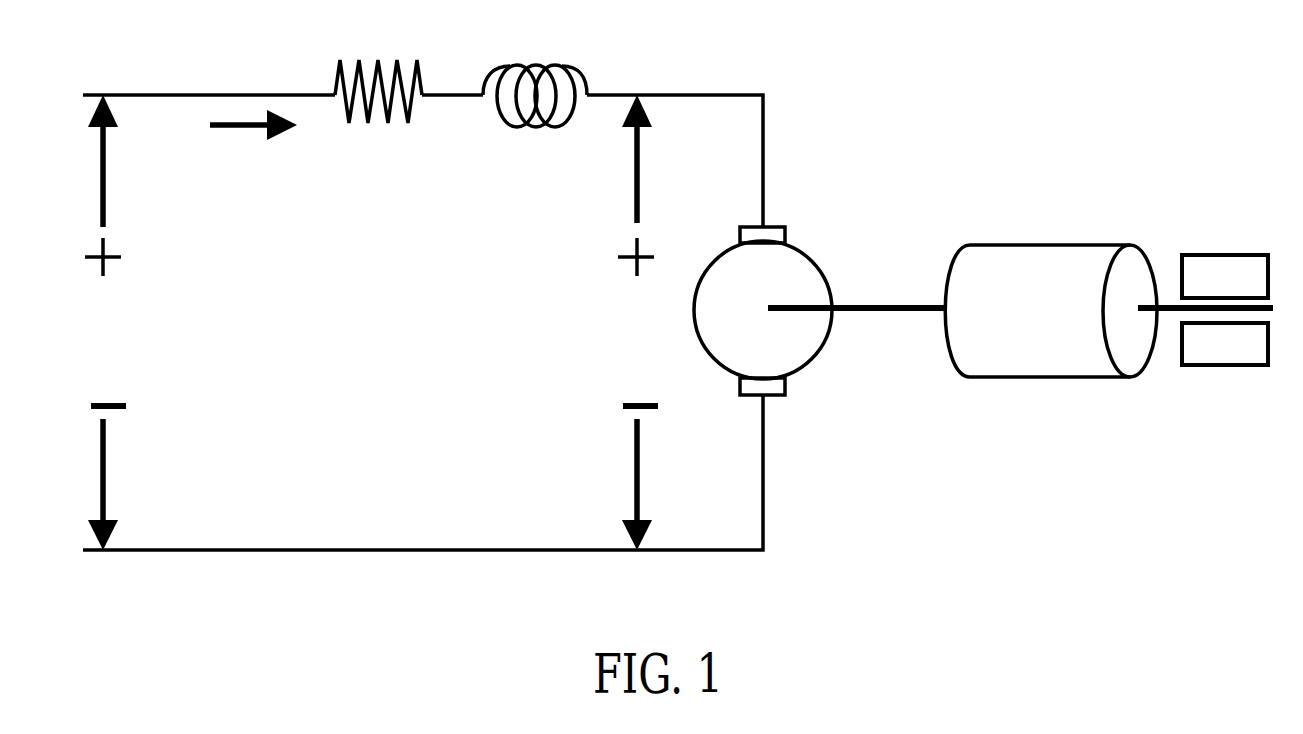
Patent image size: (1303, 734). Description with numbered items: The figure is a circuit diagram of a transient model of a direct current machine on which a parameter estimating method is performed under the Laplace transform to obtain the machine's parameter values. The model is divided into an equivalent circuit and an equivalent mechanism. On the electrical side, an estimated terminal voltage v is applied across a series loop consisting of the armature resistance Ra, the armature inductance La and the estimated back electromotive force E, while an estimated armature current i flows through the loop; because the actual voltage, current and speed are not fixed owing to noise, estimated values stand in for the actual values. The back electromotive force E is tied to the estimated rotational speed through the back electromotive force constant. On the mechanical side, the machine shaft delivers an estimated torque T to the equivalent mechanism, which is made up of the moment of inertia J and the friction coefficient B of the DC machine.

The armature resistance Ra is at (378, 61).
The armature inductance La is at (535, 63).
The estimated armature current i is at (253, 161).
The estimated terminal voltage v is at (106, 322).
The estimated back electromotive force E is at (636, 322).
The estimated torque T is at (1020, 375).
The moment of inertia J is at (1051, 311).
The friction coefficient B is at (1225, 350).